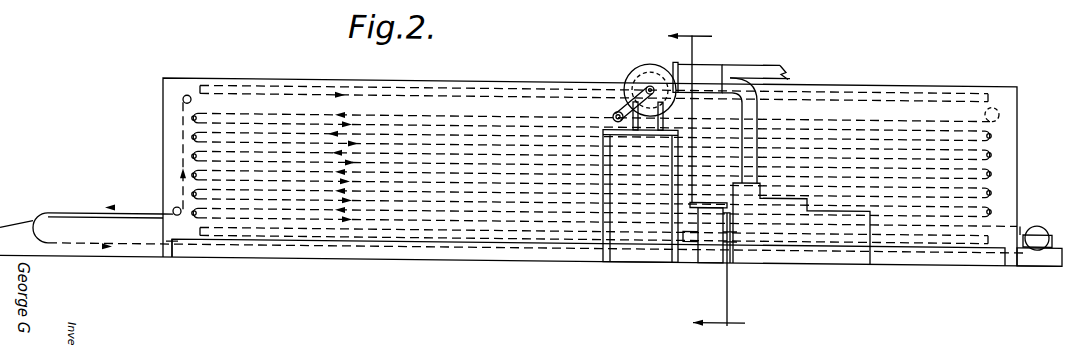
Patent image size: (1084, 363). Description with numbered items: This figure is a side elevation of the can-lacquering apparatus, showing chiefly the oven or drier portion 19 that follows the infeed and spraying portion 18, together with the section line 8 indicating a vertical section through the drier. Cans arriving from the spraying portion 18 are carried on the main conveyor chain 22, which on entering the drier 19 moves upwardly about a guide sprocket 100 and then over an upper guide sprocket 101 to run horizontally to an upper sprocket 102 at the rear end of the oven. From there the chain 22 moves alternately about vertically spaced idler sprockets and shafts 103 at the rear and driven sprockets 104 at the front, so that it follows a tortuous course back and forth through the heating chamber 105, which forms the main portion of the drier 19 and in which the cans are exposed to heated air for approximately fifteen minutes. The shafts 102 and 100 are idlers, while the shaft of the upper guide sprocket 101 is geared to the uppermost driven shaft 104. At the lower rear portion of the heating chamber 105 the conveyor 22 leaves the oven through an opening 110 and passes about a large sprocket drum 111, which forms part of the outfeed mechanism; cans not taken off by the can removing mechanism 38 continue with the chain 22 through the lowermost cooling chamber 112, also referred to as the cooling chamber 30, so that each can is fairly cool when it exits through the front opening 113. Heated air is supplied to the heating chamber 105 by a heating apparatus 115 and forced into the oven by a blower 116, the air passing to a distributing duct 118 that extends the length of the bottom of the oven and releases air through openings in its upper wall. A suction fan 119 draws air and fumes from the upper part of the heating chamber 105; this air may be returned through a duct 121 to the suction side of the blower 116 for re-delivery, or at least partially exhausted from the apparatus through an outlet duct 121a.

The section line 8- 8 is at (706, 182).
The infeed and spraying portion 18 is at (73, 202).
The drier portion 19 is at (303, 76).
The conveyor 22 is at (182, 108).
The cooling chamber 30 is at (515, 249).
The can removing mechanism 38 is at (1073, 211).
The guide sprocket 100 is at (172, 206).
The upper guide sprocket 101 is at (221, 60).
The upper sprocket 102 is at (1055, 71).
The idler sprockets and shafts 103 is at (1071, 132).
The driven sprockets 104 is at (182, 133).
The heating chamber 105 is at (596, 66).
The opening 110 is at (1070, 191).
The sprocket drum 111 is at (1045, 226).
The cooling chamber 112 is at (452, 249).
The front opening 113 is at (170, 255).
The heating apparatus 115 is at (810, 248).
The blower 116 is at (712, 249).
The distributing duct 118 is at (403, 226).
The suction fan 119 is at (660, 45).
The duct 121 is at (466, 67).
The outlet duct 121a is at (810, 50).